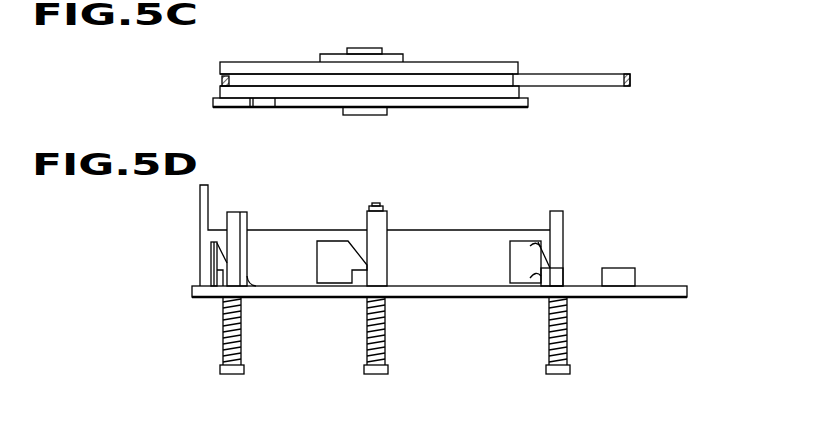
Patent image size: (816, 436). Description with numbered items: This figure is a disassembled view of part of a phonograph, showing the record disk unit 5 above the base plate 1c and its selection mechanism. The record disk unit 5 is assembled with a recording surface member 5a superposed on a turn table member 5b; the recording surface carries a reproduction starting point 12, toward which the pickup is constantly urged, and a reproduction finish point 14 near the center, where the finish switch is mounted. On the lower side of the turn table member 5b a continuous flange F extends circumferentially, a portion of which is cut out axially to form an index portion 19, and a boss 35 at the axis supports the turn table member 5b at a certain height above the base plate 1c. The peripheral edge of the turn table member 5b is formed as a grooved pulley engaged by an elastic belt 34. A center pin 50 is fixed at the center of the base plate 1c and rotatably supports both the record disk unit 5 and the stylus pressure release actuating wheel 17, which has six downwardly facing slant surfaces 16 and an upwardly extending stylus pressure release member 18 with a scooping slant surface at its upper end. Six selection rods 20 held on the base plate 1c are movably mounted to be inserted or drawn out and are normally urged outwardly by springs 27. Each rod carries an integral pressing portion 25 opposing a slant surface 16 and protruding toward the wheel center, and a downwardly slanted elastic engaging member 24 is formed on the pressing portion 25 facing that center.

In FIG. 5C, the record disk unit 5 is at (218, 67).
In FIG. 5C, the recording surface member 5a is at (473, 62).
In FIG. 5C, the turn table member 5b is at (530, 100).
In FIG. 5C, the reproduction starting point 12 is at (230, 62).
In FIG. 5C, the reproduction finish point 14 is at (312, 54).
In FIG. 5C, the index portion 19 is at (262, 108).
In FIG. 5C, the elastic belt 34 is at (583, 74).
In FIG. 5C, the boss 35 is at (385, 114).
In FIG. 5C, the continuous flange F is at (213, 103).
In FIG. 5D, the base plate 1c is at (665, 285).
In FIG. 5D, the slant surface 16 is at (215, 252).
In FIG. 5D, the stylus pressure release actuating wheel 17 is at (200, 256).
In FIG. 5D, the stylus pressure release member 18 is at (200, 203).
In FIG. 5D, the selection rod 20 is at (247, 222).
In FIG. 5D, the elastic engaging member 24 is at (535, 280).
In FIG. 5D, the pressing portion 25 is at (222, 287).
In FIG. 5D, the spring 27 is at (242, 333).
In FIG. 5D, the center pin 50 is at (380, 205).